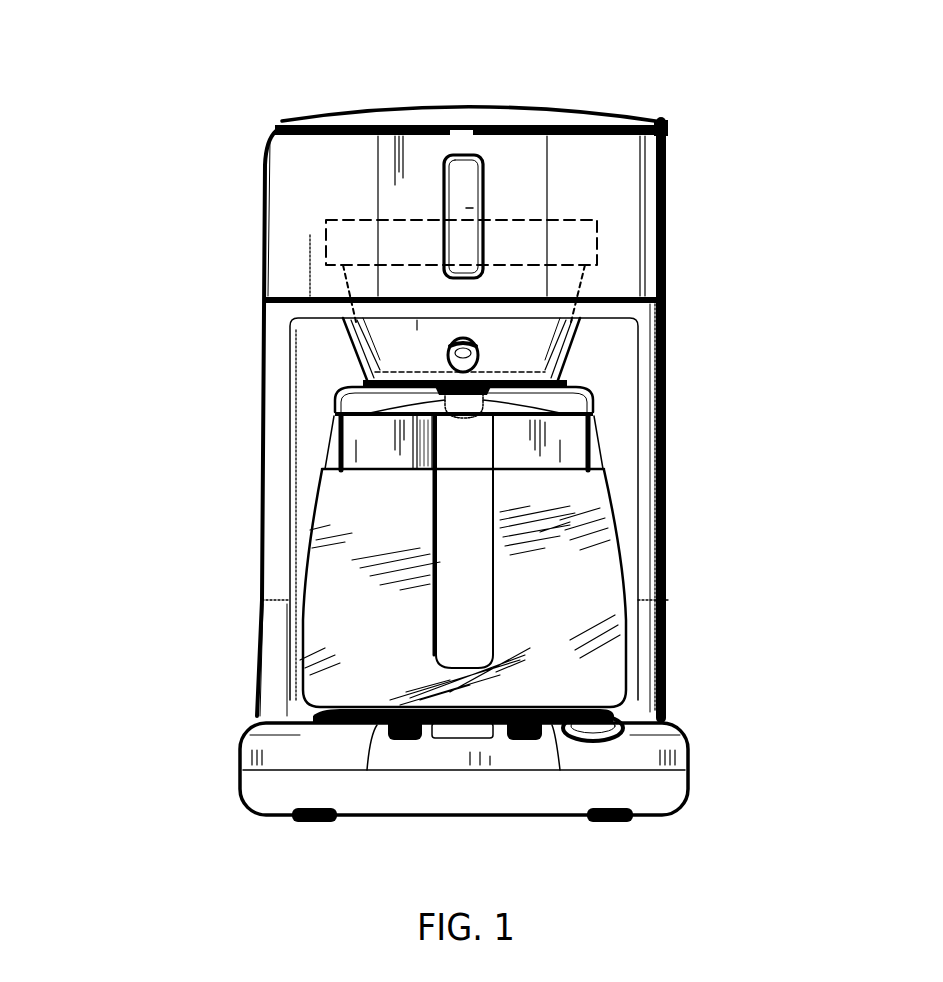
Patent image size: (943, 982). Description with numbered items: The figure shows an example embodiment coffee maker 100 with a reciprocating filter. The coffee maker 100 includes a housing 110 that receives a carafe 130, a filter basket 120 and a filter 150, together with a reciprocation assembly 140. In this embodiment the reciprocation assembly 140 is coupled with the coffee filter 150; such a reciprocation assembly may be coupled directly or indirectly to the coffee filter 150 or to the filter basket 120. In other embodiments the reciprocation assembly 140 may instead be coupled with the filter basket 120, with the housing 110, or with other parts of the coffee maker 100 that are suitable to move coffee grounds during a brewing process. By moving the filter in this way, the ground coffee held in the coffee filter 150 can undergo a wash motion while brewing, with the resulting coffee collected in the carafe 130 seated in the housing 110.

The coffee maker 100 is at (218, 98).
The housing 110 is at (263, 255).
The filter basket 120 is at (355, 362).
The carafe 130 is at (320, 510).
The reciprocation assembly 140 is at (597, 235).
The filter 150 is at (580, 288).